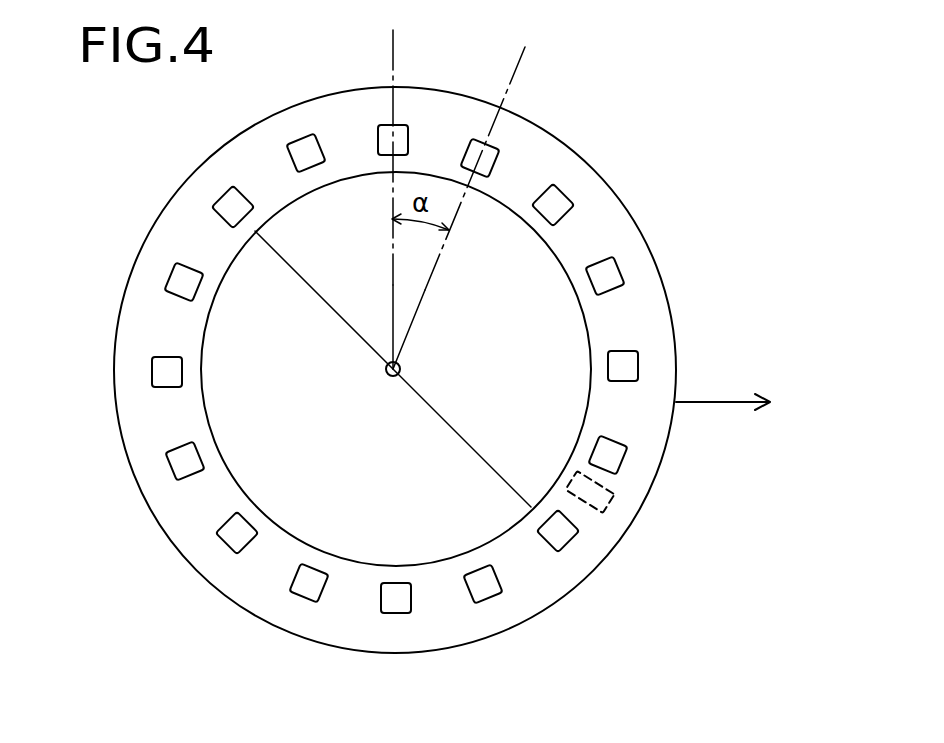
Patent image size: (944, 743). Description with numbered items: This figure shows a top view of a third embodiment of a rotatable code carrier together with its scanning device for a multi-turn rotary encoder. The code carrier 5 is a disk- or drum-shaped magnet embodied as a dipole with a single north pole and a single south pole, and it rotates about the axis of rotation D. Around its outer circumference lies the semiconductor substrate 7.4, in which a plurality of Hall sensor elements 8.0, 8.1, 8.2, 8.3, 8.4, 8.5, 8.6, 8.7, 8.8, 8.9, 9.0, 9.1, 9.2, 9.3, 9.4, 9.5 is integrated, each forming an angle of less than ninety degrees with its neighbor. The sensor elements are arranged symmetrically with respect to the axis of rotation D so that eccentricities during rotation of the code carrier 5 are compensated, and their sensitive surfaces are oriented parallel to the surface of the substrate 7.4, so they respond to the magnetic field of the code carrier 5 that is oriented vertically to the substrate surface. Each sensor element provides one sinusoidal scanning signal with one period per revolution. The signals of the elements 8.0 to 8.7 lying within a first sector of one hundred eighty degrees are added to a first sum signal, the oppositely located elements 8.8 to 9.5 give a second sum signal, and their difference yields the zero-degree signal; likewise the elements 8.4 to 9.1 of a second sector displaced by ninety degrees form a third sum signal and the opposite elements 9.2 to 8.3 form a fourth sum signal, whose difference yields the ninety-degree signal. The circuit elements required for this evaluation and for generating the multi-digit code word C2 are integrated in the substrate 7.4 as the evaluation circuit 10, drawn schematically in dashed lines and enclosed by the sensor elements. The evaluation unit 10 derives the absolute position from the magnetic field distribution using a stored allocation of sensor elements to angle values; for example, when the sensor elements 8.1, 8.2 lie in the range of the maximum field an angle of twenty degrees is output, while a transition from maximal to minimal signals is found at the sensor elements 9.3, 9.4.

The code carrier 5 is at (528, 267).
The semiconductor substrate 7.4 is at (653, 310).
The sensor element 8.0 is at (393, 138).
The sensor element 8.1 is at (484, 157).
The sensor element 8.2 is at (556, 203).
The sensor element 8.3 is at (606, 276).
The sensor element 8.4 is at (624, 366).
The sensor element 8.5 is at (610, 454).
The sensor element 8.6 is at (557, 532).
The sensor element 8.7 is at (485, 585).
The sensor element 8.8 is at (397, 598).
The sensor element 8.9 is at (308, 585).
The sensor element 9.0 is at (233, 535).
The sensor element 9.1 is at (185, 462).
The sensor element 9.2 is at (168, 372).
The sensor element 9.3 is at (185, 282).
The sensor element 9.4 is at (233, 205).
The sensor element 9.5 is at (303, 157).
The integrated evaluation circuit 10 is at (620, 515).
The axis of rotation D is at (401, 368).
The multi-digit code word C2 is at (716, 403).